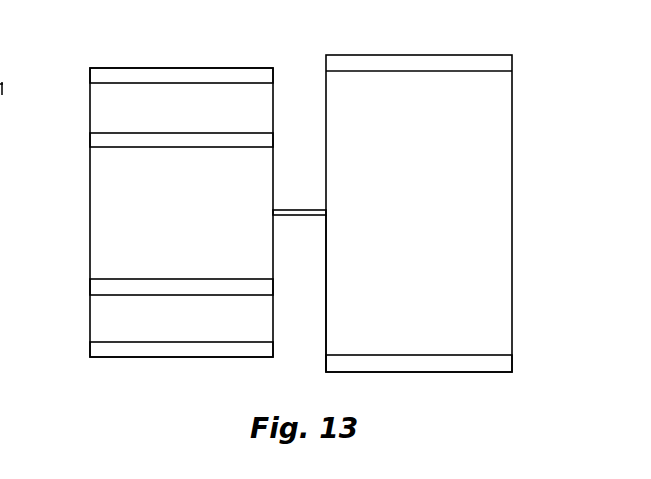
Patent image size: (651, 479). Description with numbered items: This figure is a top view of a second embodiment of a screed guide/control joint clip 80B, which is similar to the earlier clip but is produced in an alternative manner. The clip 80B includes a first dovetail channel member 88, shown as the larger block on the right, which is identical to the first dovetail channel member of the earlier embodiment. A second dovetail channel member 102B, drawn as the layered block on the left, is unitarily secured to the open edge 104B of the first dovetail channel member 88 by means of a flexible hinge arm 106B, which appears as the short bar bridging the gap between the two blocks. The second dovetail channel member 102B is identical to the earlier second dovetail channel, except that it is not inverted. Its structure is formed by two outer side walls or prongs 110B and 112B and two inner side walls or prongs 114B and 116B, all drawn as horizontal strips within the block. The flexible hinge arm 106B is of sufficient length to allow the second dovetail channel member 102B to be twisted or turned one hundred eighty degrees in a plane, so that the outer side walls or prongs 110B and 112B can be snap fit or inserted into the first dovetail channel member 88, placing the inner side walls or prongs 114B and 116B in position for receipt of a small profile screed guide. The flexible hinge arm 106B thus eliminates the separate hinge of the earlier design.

The second dovetail channel member 102B is at (147, 197).
The outer side wall or prong 112B is at (228, 68).
The inner side wall or prong 116B is at (90, 140).
The inner side wall or prong 114B is at (90, 288).
The outer side wall or prong 110B is at (165, 353).
The flexible hinge arm 106B is at (302, 210).
The open edge 104B is at (326, 316).
The screed guide/control joint clip 80B is at (394, 204).
The first dovetail channel member 88 is at (401, 372).